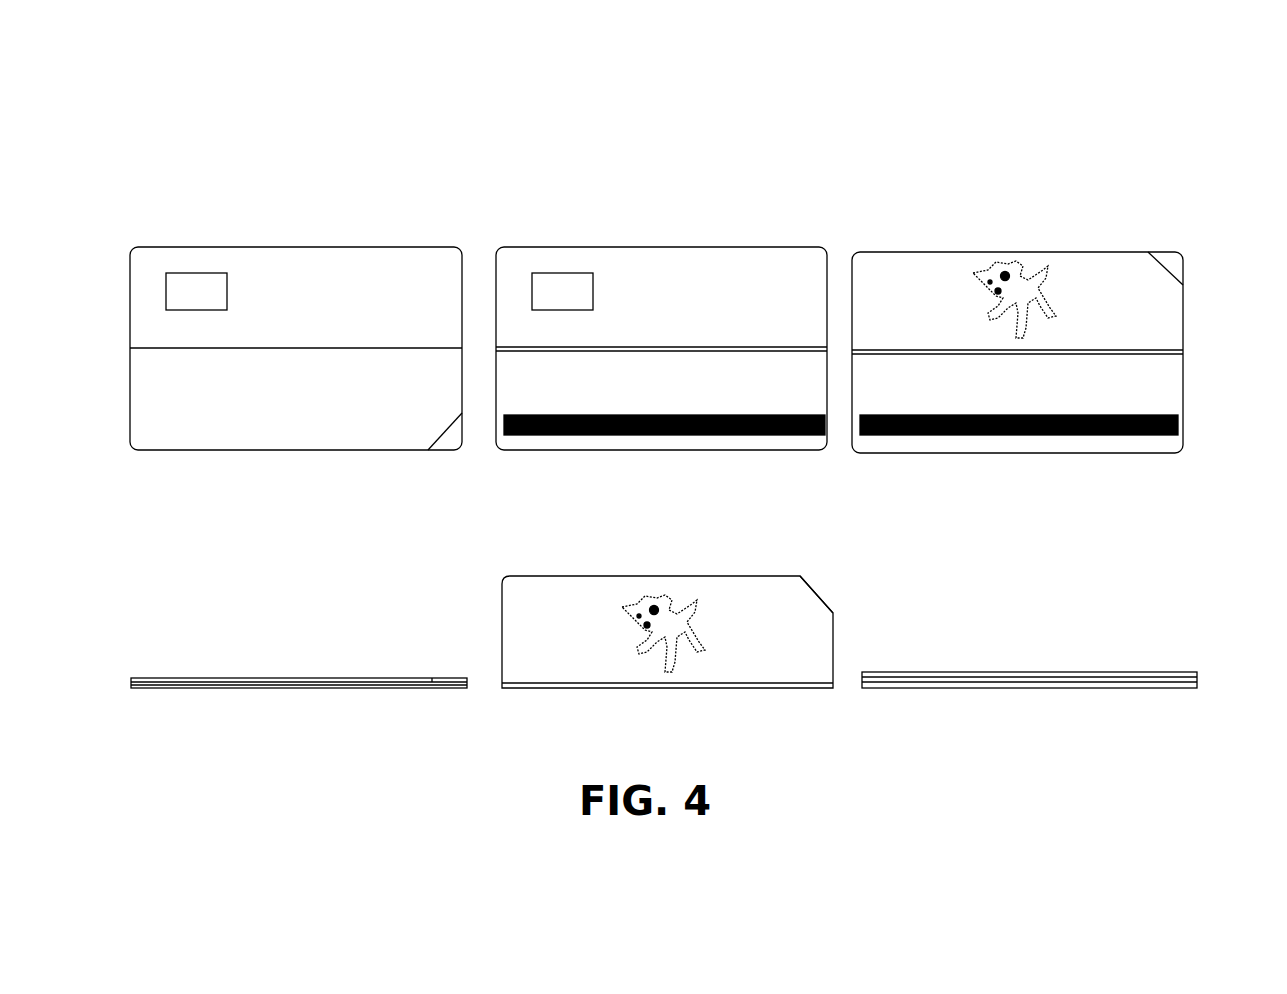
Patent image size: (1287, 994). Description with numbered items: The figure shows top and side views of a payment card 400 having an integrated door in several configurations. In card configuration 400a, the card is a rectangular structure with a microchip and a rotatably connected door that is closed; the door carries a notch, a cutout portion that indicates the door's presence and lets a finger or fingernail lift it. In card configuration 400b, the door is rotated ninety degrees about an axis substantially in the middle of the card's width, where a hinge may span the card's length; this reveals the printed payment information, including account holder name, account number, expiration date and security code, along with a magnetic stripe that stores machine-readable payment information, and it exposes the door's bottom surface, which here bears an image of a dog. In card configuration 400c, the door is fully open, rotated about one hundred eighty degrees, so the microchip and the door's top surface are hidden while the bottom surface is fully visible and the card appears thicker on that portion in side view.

The payment card 400 is at (701, 369).
The card configuration 400a is at (330, 320).
The card configuration 400b is at (661, 320).
The card configuration 400c is at (1060, 317).